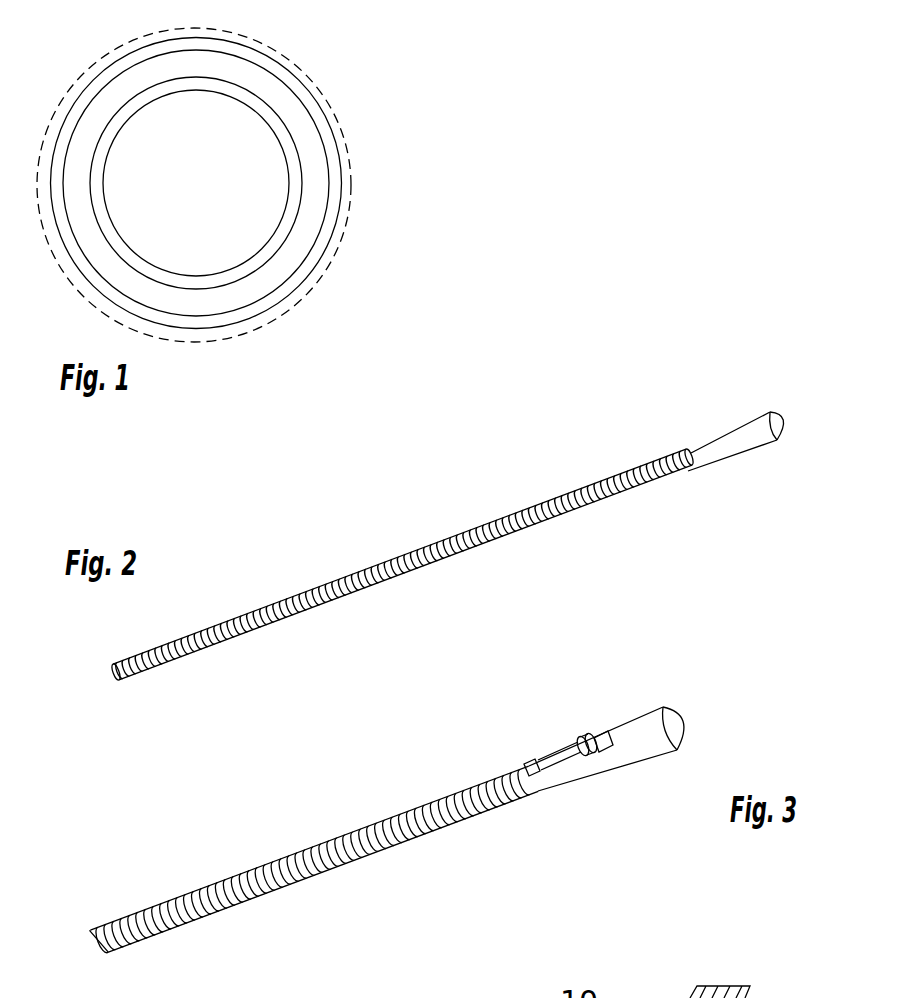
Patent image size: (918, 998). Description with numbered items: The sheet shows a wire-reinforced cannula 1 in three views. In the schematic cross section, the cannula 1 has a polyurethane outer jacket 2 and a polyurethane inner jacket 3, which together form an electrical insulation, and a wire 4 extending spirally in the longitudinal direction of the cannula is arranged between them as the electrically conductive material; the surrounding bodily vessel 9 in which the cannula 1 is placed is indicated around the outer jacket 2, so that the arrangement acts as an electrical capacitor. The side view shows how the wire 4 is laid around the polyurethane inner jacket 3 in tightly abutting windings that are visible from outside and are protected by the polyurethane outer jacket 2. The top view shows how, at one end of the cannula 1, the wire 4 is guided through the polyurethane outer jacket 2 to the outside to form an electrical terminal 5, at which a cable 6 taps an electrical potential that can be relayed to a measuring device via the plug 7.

In FIG. 1, the cannula 1 is at (298, 53).
In FIG. 2, the cannula 1 is at (578, 416).
In FIG. 3, the cannula 1 is at (365, 745).
In FIG. 1, the polyurethane outer jacket 2 is at (320, 118).
In FIG. 2, the polyurethane outer jacket 2 is at (513, 537).
In FIG. 3, the polyurethane outer jacket 2 is at (578, 771).
In FIG. 1, the polyurethane inner jacket 3 is at (289, 170).
In FIG. 2, the polyurethane inner jacket 3 is at (122, 684).
In FIG. 1, the wire 4 is at (310, 223).
In FIG. 2, the wire 4 is at (603, 503).
In FIG. 3, the wire 4 is at (498, 803).
In FIG. 3, the electrical terminal 5 is at (525, 763).
In FIG. 3, the cable 6 is at (554, 758).
In FIG. 3, the plug 7 is at (601, 731).
In FIG. 1, the bodily vessel 9 is at (300, 293).